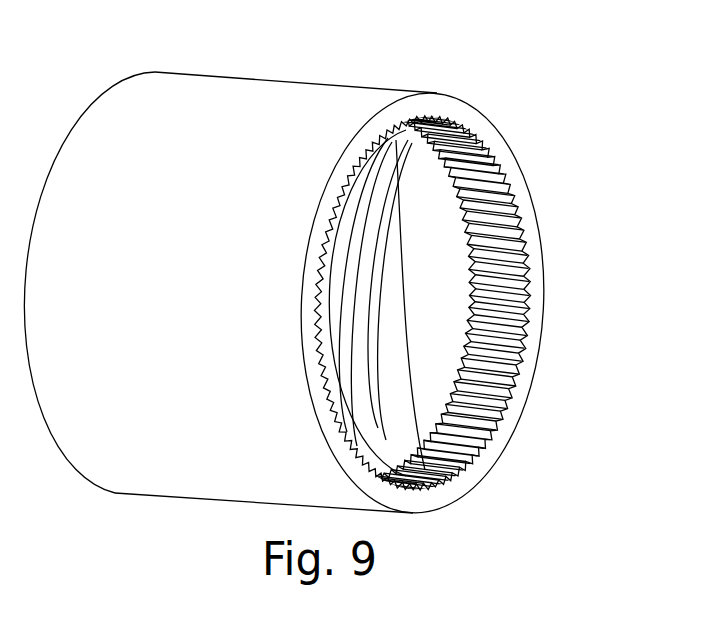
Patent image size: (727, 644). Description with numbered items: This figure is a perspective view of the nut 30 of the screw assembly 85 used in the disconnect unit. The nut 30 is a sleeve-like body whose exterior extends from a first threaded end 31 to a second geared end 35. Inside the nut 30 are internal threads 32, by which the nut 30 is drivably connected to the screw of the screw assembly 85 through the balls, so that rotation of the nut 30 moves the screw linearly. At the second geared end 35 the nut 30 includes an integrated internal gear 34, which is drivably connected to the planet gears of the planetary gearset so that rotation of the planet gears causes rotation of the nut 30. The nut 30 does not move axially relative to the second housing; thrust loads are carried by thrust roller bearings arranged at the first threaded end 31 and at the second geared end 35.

The nut 30 is at (334, 265).
The screw assembly 85 is at (383, 76).
The first threaded end 31 is at (118, 79).
The internal threads 32 is at (393, 242).
The internal gear 34 is at (525, 327).
The second geared end 35 is at (470, 101).